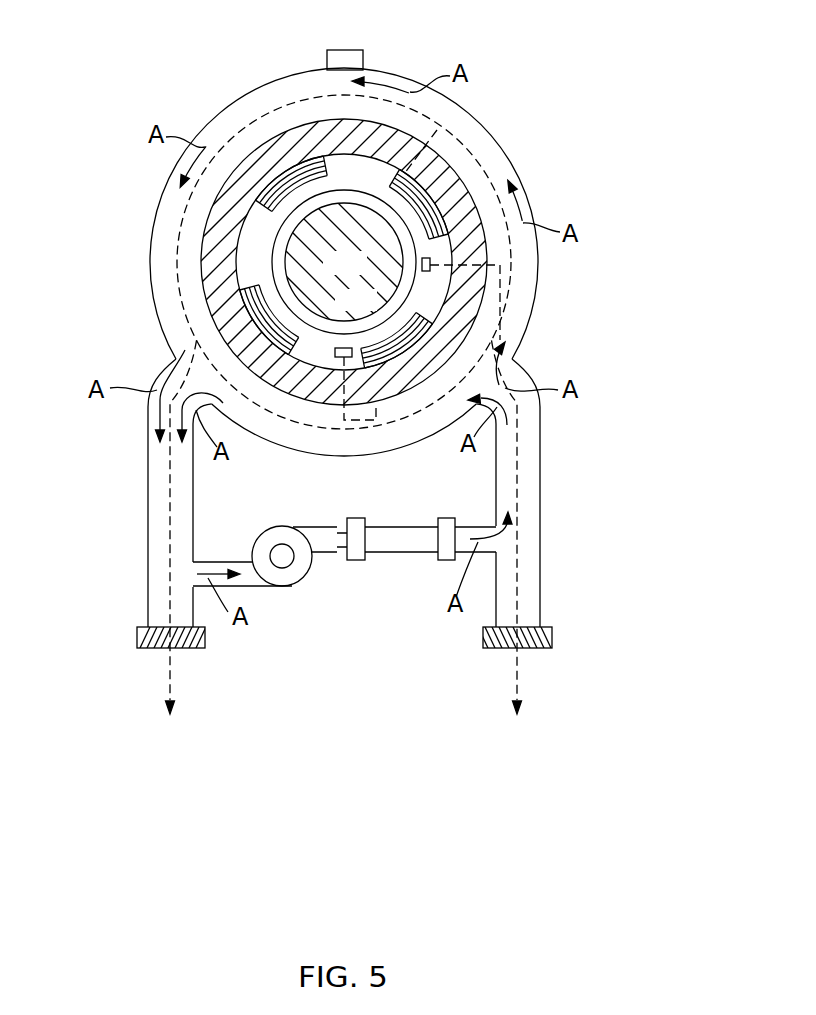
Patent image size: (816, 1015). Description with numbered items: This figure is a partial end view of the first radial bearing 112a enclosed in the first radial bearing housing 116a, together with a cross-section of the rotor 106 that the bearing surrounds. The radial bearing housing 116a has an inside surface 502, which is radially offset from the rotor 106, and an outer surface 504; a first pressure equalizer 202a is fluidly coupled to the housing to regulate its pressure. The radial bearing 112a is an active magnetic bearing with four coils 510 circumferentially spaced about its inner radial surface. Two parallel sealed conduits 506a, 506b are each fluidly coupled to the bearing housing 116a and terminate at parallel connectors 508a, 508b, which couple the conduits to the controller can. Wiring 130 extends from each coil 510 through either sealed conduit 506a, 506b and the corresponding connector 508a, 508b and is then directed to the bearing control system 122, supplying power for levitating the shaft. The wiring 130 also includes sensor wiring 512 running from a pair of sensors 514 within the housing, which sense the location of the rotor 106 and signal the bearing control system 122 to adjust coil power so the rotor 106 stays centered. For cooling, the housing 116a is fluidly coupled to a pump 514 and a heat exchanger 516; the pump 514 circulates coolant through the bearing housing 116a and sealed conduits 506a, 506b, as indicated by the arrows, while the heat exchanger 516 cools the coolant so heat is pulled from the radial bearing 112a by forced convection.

The rotor 106 is at (364, 277).
The first radial bearing 112a is at (430, 180).
The first radial bearing housing 116a is at (596, 160).
The wiring 130 is at (148, 474).
The first pressure equalizer 202a is at (345, 54).
The inside surface 502 is at (272, 243).
The outer surface 504 is at (161, 196).
The parallel sealed conduit 506a is at (148, 523).
The parallel sealed conduit 506b is at (541, 497).
The parallel connector 508a is at (137, 640).
The parallel connector 508b is at (552, 638).
The coils 510 is at (283, 190).
The sensor wiring 512 is at (520, 453).
The sensors / pump 514 is at (421, 266).
The heat exchanger 516 is at (403, 546).
The bearing control system 122 is at (347, 734).